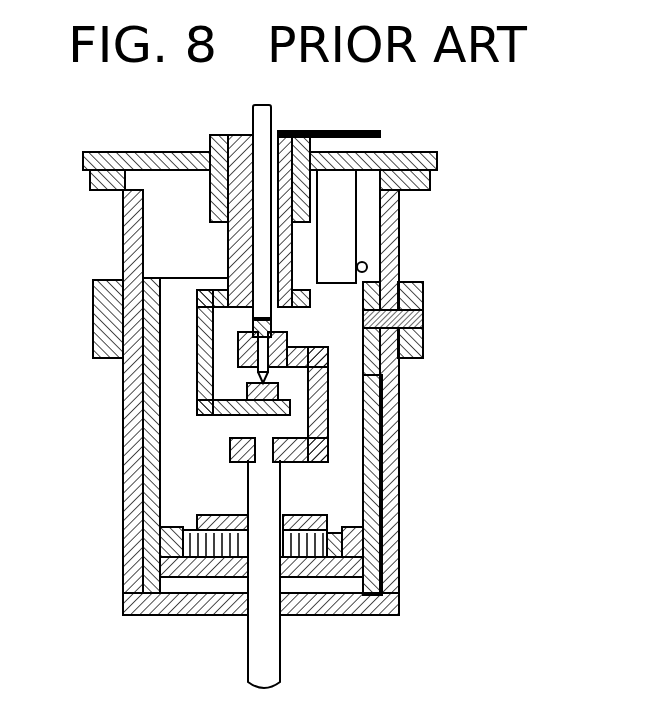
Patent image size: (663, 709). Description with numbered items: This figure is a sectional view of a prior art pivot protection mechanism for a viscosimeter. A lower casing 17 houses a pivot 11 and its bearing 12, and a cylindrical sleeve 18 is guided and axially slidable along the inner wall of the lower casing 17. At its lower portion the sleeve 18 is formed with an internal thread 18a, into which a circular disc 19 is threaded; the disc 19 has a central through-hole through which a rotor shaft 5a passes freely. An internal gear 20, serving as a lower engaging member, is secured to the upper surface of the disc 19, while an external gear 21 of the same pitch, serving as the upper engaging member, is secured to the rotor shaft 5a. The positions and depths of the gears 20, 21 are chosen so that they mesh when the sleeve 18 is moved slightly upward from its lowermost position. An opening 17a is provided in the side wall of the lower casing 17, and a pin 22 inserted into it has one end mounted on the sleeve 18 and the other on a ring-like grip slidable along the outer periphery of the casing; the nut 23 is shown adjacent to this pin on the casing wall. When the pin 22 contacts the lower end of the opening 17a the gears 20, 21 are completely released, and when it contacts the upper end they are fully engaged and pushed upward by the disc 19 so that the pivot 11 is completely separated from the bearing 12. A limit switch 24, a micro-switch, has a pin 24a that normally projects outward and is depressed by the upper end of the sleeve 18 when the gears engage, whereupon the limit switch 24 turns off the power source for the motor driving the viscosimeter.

The rotor shaft 5a is at (283, 647).
The pivot 11 is at (298, 350).
The bearing 12 is at (235, 402).
The lower casing 17 is at (400, 414).
The opening 17a is at (424, 294).
The cylindrical sleeve 18 is at (385, 466).
The thread 18a is at (365, 514).
The circular disc 19 is at (212, 583).
The internal gear 20 is at (182, 535).
The external gear 21 is at (328, 516).
The pin 22 is at (424, 318).
The nut 23 is at (424, 350).
The limit switch 24 is at (347, 220).
The pin 24a is at (368, 260).